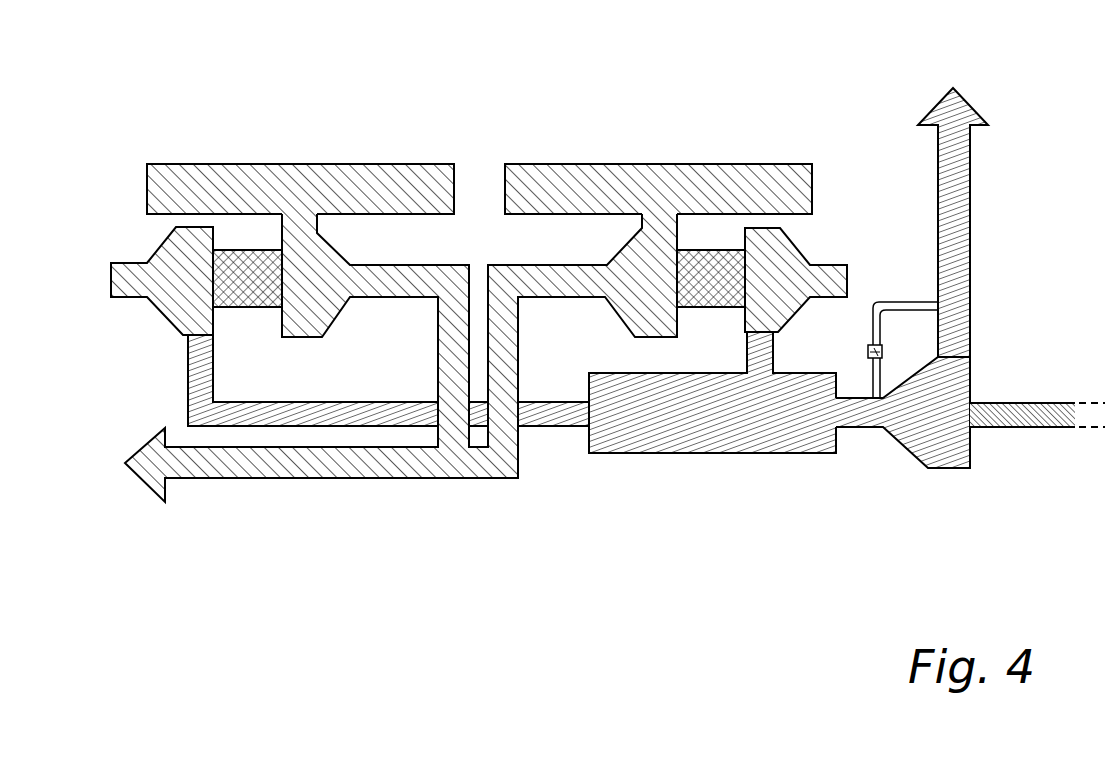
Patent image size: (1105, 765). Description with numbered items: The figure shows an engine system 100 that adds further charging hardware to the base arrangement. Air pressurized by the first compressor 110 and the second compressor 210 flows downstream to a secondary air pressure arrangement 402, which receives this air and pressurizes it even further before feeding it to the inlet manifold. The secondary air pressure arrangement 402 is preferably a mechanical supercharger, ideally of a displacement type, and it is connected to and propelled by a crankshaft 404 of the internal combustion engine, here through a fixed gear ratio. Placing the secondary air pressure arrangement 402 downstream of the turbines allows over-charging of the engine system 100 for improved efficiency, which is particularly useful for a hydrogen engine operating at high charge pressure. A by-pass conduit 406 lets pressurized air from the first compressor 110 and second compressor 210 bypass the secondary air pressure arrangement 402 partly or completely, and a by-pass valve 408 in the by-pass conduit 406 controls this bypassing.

The engine system 100 is at (266, 130).
The first compressor 110 is at (182, 293).
The second compressor 210 is at (805, 262).
The secondary air pressure arrangement 402 is at (940, 450).
The crankshaft 404 is at (1028, 403).
The by-pass conduit 406 is at (906, 302).
The by-pass valve 408 is at (882, 352).